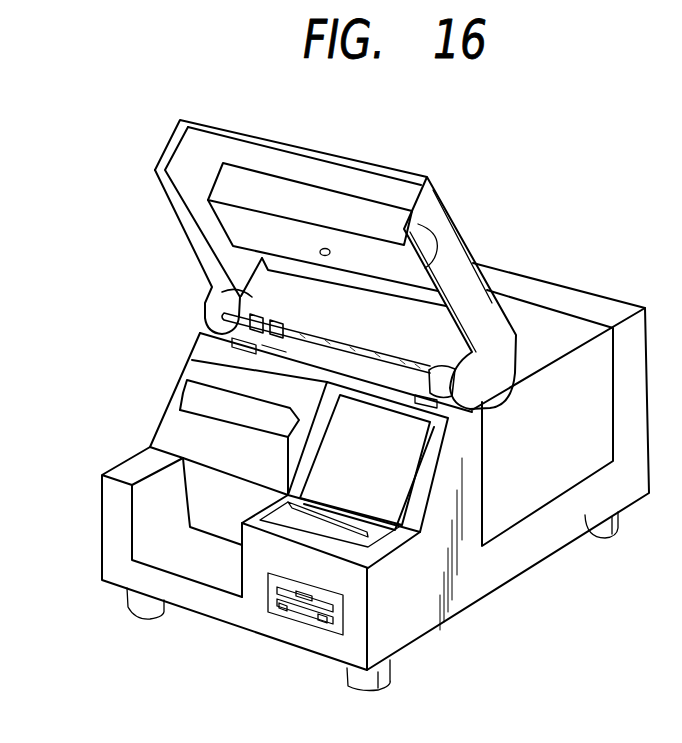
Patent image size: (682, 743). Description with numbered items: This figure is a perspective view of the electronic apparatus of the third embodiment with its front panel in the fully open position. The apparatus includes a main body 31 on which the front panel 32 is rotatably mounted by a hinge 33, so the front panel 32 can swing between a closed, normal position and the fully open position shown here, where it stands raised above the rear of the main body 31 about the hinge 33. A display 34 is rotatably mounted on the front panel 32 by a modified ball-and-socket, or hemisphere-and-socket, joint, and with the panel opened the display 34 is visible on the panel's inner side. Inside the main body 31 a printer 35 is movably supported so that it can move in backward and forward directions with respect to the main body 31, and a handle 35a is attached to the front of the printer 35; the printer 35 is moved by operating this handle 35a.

The main body 31 is at (533, 547).
The front panel 32 is at (332, 230).
The hinge 33 is at (218, 289).
The display 34 is at (378, 218).
The printer 35 is at (249, 420).
The handle 35a is at (182, 384).